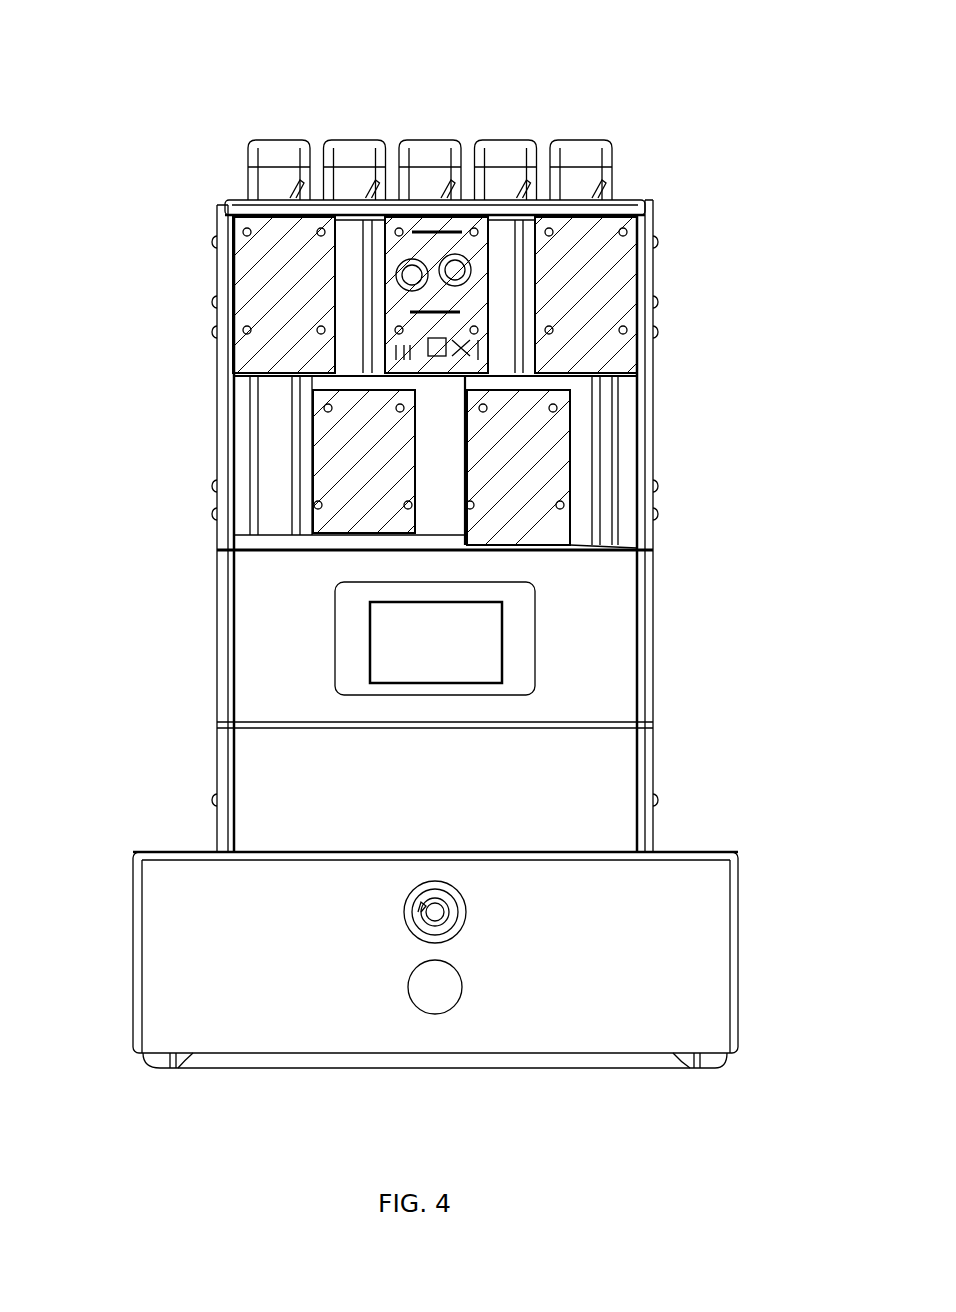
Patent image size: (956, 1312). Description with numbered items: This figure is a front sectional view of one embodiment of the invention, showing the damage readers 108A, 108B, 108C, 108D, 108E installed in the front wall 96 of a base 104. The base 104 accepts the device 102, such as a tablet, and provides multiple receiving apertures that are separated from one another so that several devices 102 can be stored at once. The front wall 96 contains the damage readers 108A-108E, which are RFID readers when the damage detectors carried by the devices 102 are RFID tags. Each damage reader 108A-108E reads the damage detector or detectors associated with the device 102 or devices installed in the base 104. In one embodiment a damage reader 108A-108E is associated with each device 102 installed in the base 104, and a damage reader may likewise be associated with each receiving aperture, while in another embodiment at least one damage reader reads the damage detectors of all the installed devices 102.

The front wall 96 is at (643, 202).
The device 102 is at (572, 140).
The base 104 is at (597, 658).
The damage reader 108A is at (258, 292).
The damage reader 108B is at (348, 466).
The damage reader 108C is at (400, 245).
The damage reader 108D is at (550, 470).
The damage reader 108E is at (612, 284).